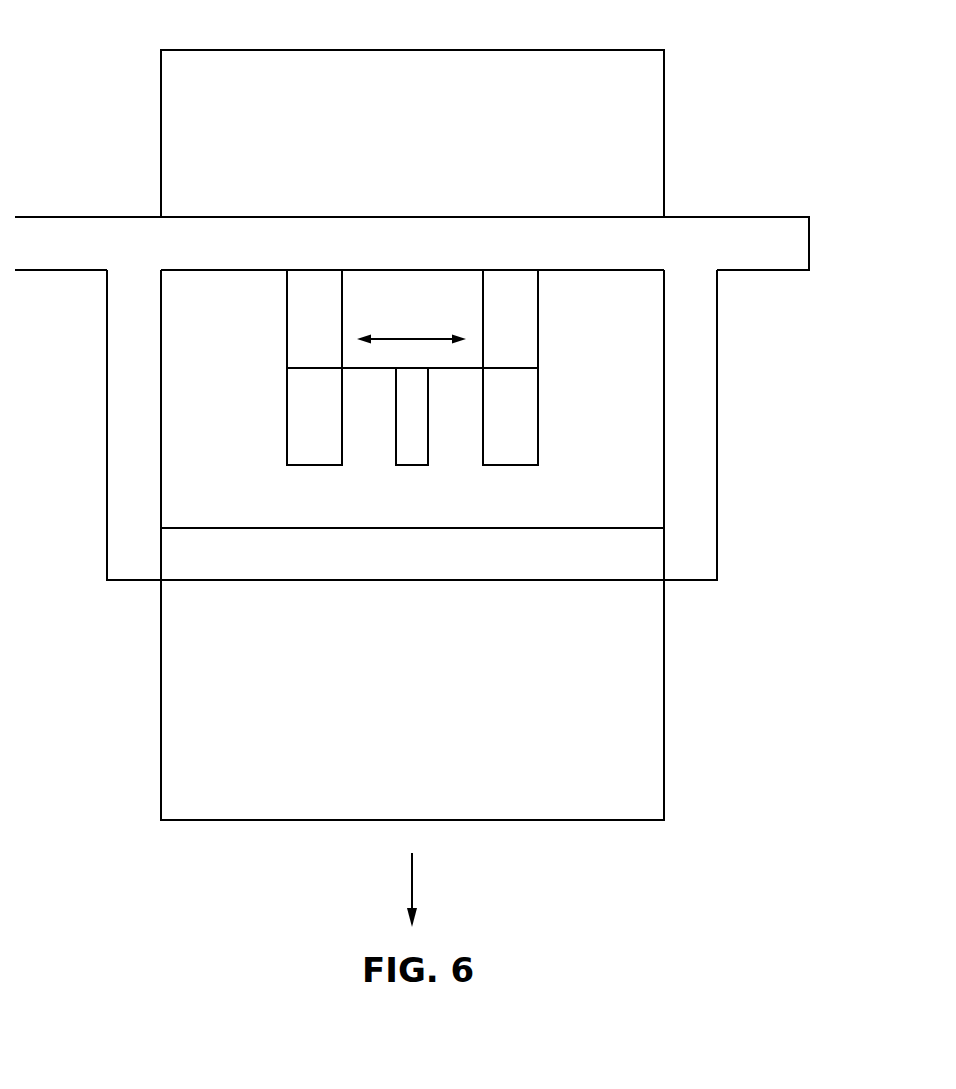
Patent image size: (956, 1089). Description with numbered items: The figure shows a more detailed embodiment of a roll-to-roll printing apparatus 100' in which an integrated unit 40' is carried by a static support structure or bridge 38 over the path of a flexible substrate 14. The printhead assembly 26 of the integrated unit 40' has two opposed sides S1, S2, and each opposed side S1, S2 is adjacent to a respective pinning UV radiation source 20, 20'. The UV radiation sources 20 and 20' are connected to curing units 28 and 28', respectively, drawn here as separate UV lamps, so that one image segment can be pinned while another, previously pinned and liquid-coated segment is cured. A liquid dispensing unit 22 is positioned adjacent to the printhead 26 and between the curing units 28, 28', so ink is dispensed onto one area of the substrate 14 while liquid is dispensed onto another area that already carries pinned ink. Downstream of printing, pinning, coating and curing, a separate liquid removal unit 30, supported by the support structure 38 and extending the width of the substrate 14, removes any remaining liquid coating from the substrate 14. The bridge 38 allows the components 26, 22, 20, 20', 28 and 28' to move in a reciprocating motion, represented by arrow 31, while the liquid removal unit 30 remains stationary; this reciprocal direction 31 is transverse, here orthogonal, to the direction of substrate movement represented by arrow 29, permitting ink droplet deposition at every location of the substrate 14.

The roll-to-roll printing apparatus 100' is at (757, 67).
The substrate 14 is at (637, 698).
The support structure 38 is at (751, 235).
The integrated unit 40' is at (482, 425).
The liquid removal unit 30 is at (645, 556).
The pinning UV radiation source 20 is at (276, 319).
The pinning UV radiation source 20' is at (558, 319).
The curing unit 28 is at (276, 416).
The curing unit 28' is at (558, 416).
The printhead assembly 26 is at (400, 310).
The liquid dispensing unit 22 is at (413, 437).
The arrow representing reciprocal direction 31 is at (430, 335).
The arrow representing substrate movement direction 29 is at (413, 882).
The opposed side of printhead S1 is at (340, 319).
The opposed side of printhead S2 is at (484, 319).